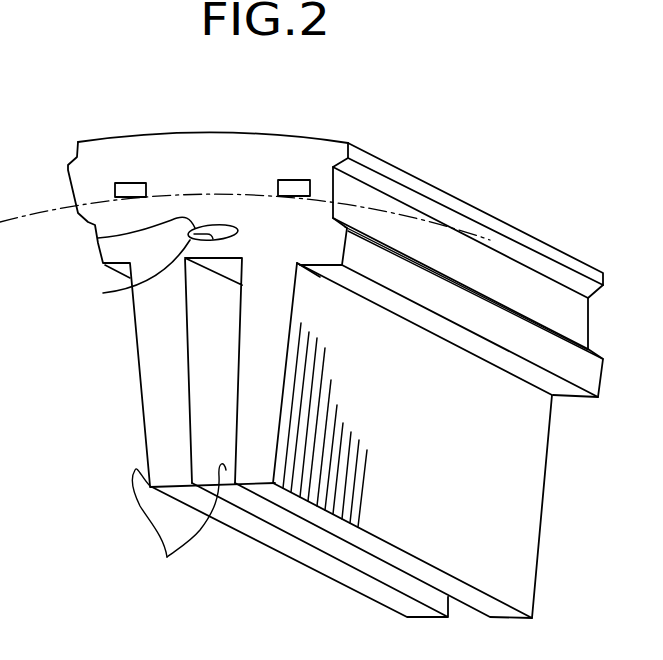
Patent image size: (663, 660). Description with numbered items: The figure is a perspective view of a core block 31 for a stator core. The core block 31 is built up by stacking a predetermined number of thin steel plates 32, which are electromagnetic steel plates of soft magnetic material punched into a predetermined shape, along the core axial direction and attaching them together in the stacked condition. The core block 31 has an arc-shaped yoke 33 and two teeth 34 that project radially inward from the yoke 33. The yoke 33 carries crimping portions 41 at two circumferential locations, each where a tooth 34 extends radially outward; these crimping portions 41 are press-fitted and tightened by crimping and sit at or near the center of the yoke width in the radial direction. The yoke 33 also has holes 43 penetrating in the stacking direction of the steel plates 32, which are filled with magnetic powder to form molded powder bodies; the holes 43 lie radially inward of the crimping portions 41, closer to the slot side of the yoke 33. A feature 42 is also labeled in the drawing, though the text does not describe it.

The core block 31 is at (467, 162).
The steel plate 32 is at (338, 520).
The arc-shaped yoke 33 is at (182, 152).
The teeth 34 is at (332, 438).
The crimping portions 41 is at (133, 183).
The lip portion 42 is at (98, 238).
The holes 43 is at (153, 268).